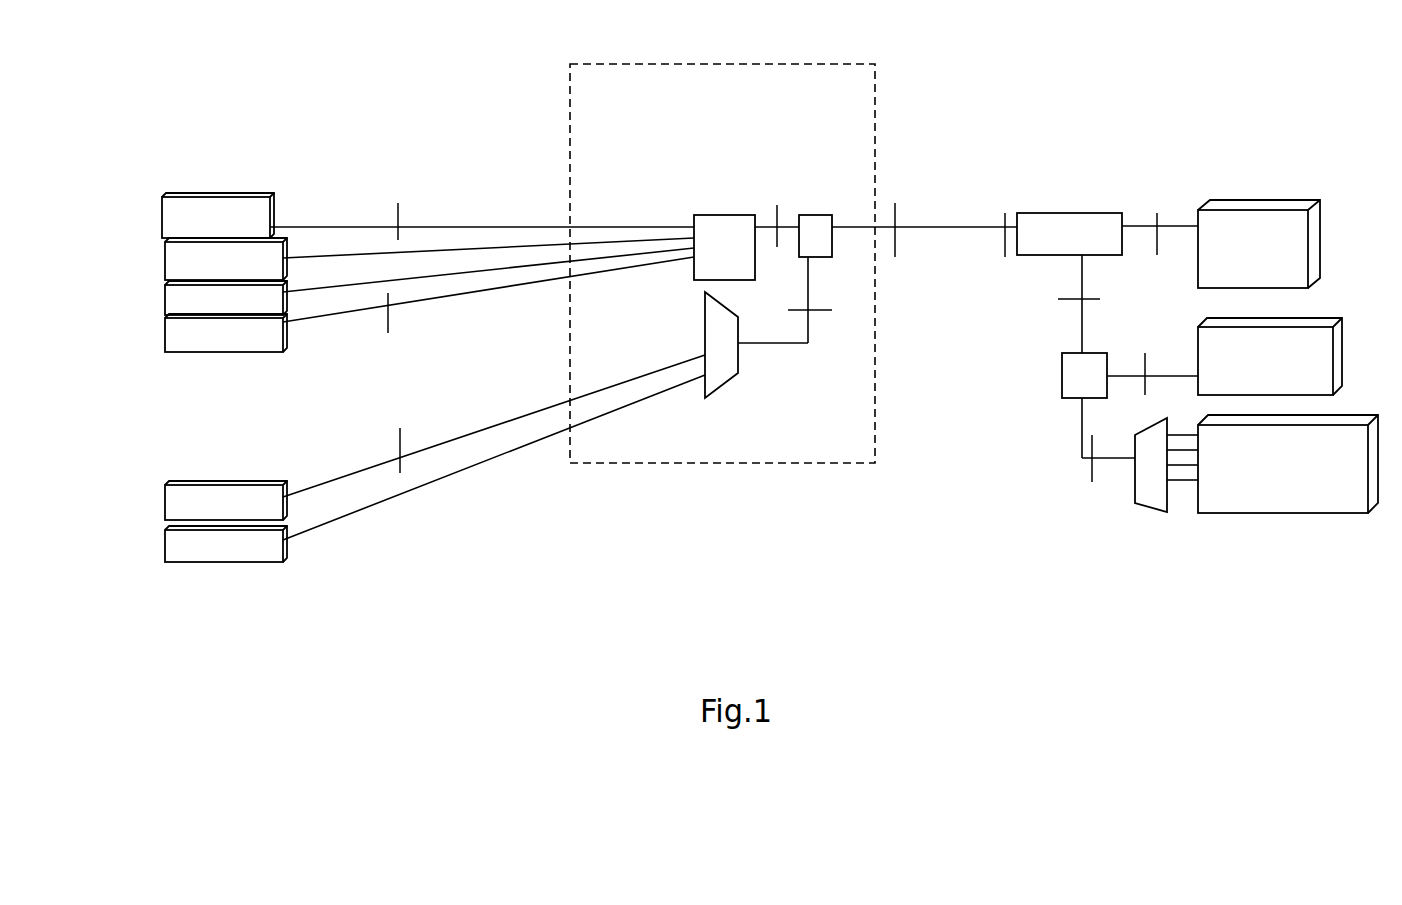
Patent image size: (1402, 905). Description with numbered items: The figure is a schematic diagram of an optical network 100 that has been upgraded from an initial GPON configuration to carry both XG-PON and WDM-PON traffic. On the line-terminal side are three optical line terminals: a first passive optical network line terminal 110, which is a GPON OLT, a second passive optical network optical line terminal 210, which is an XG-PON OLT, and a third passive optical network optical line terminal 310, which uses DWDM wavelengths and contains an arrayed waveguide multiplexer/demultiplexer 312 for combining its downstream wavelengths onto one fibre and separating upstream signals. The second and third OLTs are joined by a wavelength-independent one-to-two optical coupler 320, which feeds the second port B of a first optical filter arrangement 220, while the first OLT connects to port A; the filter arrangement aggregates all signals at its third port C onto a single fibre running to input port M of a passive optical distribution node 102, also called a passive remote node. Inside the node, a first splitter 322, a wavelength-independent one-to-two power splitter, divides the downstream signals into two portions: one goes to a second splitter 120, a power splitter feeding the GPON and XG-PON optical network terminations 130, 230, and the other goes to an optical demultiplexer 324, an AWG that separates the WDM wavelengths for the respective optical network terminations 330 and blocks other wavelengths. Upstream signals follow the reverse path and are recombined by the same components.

The optical network 100 is at (316, 58).
The passive optical distribution node 102 is at (888, 51).
The first passive optical network line terminal 110 is at (1265, 200).
The second splitter 120 is at (732, 213).
The optical network termination 130 is at (162, 230).
The second passive optical network optical line terminal 210 is at (1308, 318).
The first optical filter arrangement 220 is at (1060, 213).
The optical network termination 230 is at (165, 293).
The third passive optical network optical line terminal 310 is at (1305, 513).
The multiplexer/demultiplexer 312 is at (1153, 502).
The 1:2 optical coupler 320 is at (1060, 377).
The first splitter 322 is at (832, 258).
The optical demultiplexer 324 is at (733, 377).
The optical network termination 330 is at (165, 508).